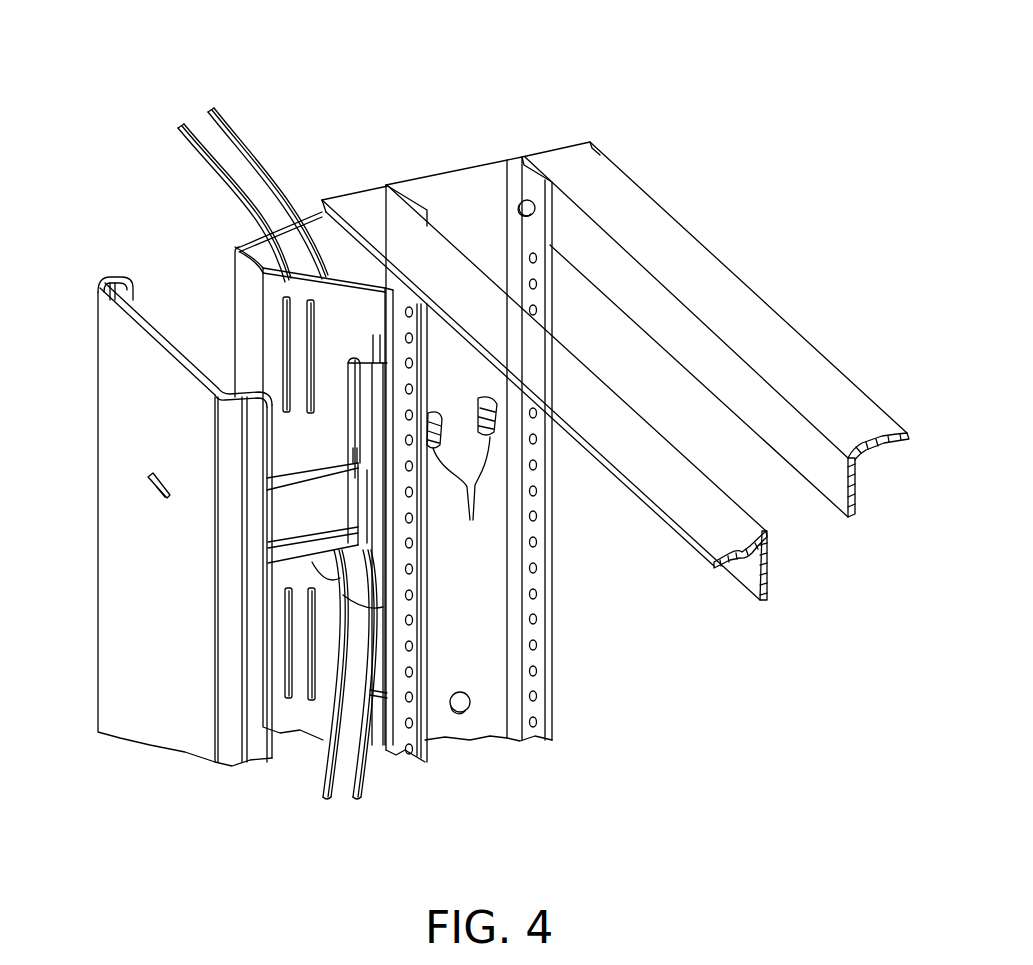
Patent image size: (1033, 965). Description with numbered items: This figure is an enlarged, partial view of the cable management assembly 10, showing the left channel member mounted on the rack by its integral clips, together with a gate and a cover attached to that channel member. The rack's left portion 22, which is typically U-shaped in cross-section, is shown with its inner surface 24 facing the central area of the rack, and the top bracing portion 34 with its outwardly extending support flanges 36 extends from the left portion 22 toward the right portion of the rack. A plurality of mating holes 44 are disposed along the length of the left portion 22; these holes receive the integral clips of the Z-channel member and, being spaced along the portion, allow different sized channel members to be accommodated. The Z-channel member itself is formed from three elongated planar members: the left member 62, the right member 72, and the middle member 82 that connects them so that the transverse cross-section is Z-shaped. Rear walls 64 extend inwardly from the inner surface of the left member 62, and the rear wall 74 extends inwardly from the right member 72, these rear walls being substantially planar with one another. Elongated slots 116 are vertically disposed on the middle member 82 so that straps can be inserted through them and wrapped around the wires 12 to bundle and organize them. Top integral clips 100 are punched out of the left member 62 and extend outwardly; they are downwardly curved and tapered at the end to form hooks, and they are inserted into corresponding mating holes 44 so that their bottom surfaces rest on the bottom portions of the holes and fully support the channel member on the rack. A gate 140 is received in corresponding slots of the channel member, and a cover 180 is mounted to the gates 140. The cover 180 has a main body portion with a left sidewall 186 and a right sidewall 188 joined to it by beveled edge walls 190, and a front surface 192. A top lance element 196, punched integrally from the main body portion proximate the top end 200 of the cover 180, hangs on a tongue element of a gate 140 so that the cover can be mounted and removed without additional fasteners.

The cable management assembly 10 is at (594, 103).
The wires 12 is at (228, 122).
The left portion 22 is at (428, 170).
The inner surface 24 is at (466, 187).
The top bracing portion 34 is at (745, 275).
The support flanges 36 is at (370, 203).
The mating holes 44 is at (497, 401).
The left member 62 is at (386, 515).
The rear walls 64 is at (353, 425).
The right member 72 is at (257, 243).
The rear wall 74 is at (245, 277).
The middle member 82 is at (340, 315).
The top integral clips 100 is at (462, 493).
The elongated slots 116 is at (307, 347).
The gates 140 is at (323, 500).
The cover 180 is at (130, 740).
The left sidewall 186 is at (128, 282).
The right sidewall 188 is at (258, 745).
The beveled edge walls 190 is at (105, 283).
The front surface 192 is at (137, 403).
The top lance element 196 is at (150, 497).
The top end 200 is at (140, 313).